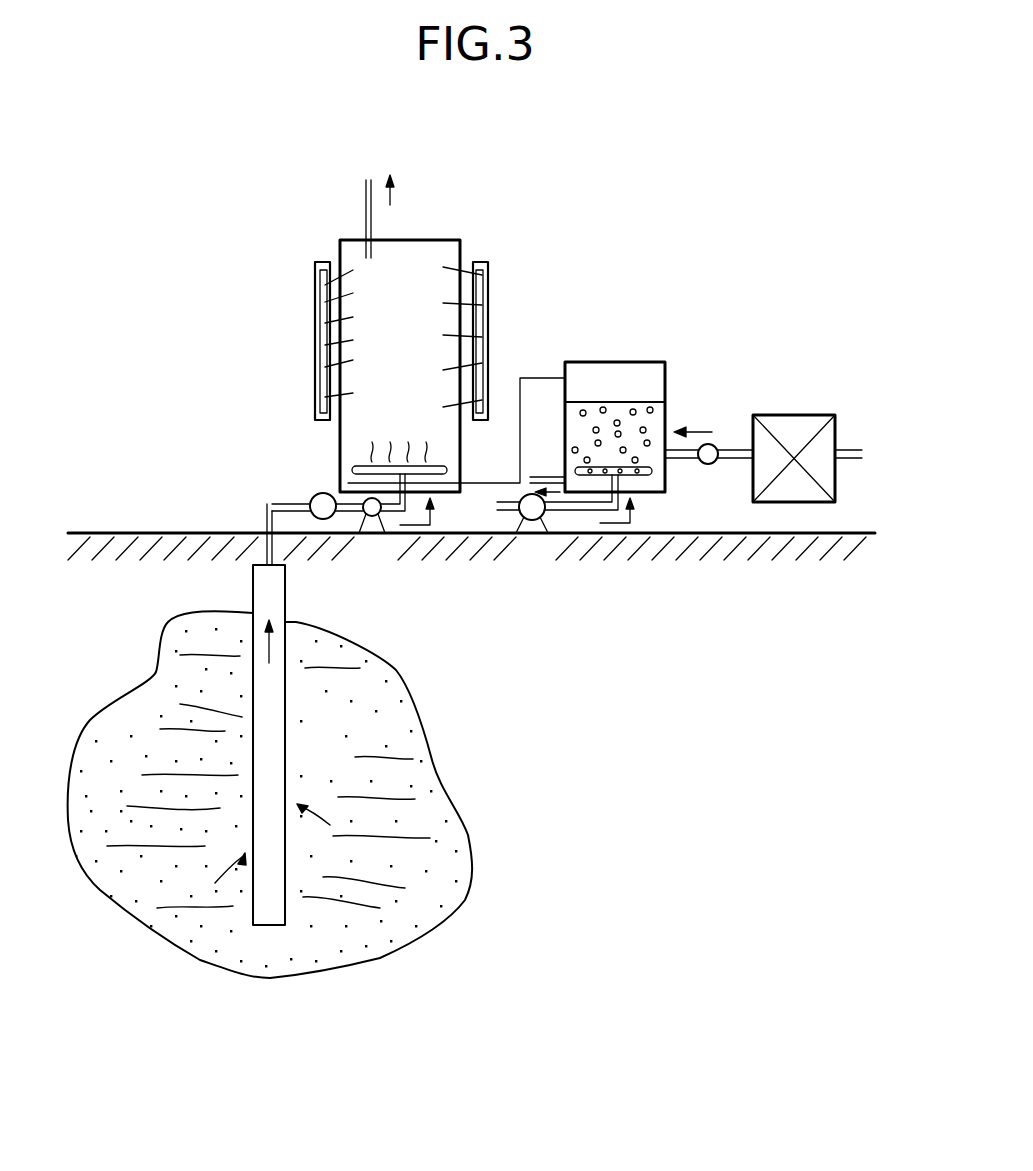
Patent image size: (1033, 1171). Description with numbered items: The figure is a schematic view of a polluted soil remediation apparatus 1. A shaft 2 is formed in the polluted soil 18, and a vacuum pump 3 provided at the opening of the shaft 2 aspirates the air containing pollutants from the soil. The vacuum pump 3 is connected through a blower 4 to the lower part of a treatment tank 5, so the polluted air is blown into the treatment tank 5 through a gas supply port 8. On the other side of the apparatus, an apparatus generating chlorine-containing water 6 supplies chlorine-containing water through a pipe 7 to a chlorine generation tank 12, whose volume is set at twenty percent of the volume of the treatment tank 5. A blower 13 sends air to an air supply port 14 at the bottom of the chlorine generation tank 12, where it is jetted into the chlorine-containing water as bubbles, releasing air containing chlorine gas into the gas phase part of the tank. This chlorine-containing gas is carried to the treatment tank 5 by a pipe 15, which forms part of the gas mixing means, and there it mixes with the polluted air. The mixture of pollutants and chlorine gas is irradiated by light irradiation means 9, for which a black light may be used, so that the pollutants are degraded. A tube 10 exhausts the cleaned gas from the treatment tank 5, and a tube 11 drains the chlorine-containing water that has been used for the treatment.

The polluted soil remediation apparatus 1 is at (749, 233).
The shaft 2 is at (286, 742).
The vacuum pump 3 is at (322, 522).
The blower 4 is at (372, 518).
The treatment tank 5 is at (433, 250).
The apparatus generating chlorine-containing water 6 is at (808, 415).
The pipe 7 is at (734, 460).
The gas supply port 8 is at (446, 467).
The light irradiation means 9 is at (315, 350).
The tube 10 is at (366, 212).
The tube 11 is at (541, 476).
The chlorine generation tank 12 is at (643, 368).
The blower 13 is at (532, 522).
The air supply port 14 is at (646, 479).
The pipe 15 is at (540, 377).
The polluted soil 18 is at (414, 798).